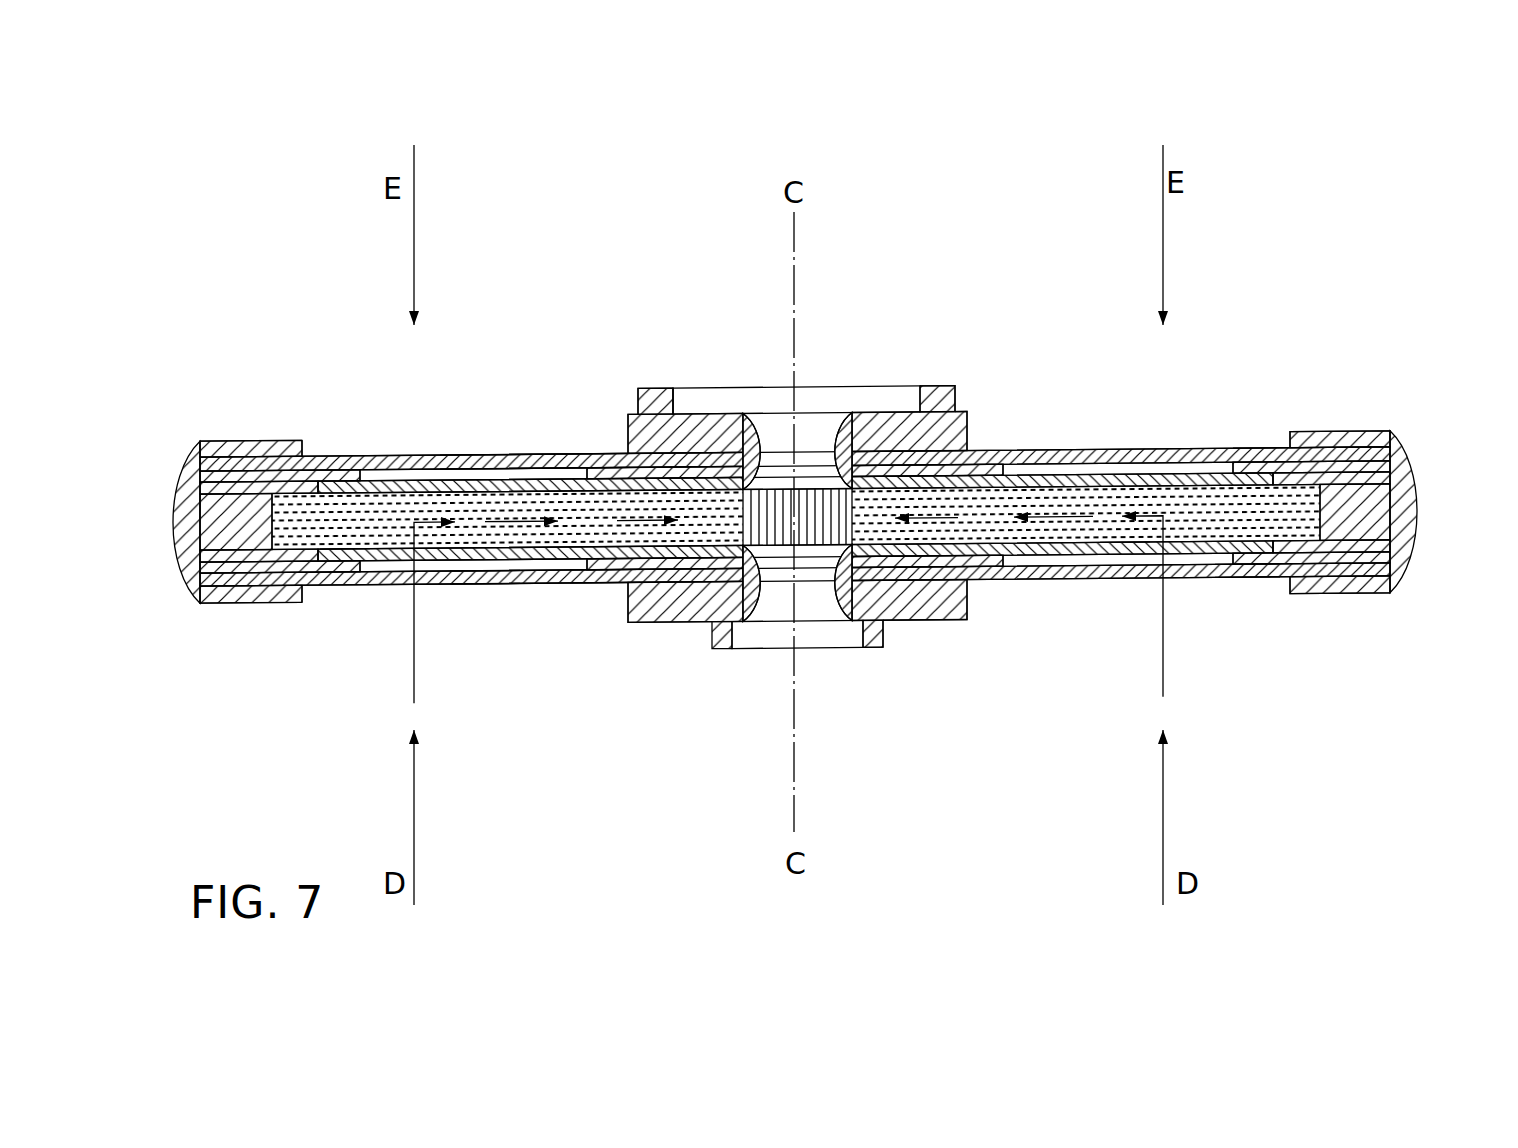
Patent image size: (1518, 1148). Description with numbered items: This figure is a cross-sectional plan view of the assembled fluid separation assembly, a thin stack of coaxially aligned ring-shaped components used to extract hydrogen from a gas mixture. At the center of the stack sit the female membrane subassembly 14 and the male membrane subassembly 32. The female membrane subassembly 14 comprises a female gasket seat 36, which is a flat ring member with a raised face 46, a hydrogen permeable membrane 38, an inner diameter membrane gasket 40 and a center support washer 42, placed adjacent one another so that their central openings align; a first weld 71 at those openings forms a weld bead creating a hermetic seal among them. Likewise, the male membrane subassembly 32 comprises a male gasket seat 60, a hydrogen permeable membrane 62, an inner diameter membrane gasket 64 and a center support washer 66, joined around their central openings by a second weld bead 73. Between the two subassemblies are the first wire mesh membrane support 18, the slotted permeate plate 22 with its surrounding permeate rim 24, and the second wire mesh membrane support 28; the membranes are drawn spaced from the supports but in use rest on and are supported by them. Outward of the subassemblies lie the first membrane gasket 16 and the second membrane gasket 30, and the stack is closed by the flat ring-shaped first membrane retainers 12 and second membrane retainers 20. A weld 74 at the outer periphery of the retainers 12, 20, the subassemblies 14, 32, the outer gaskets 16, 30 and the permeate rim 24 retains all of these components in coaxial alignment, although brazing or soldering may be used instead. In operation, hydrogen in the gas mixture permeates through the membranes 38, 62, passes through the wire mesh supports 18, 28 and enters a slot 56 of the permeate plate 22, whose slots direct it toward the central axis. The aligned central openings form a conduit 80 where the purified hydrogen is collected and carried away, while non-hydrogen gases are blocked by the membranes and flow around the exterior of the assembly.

The first membrane retainers 12 is at (1347, 426).
The female membrane subassembly 14 is at (592, 458).
The first membrane gasket 16 is at (1305, 458).
The first wire mesh membrane support 18 is at (385, 478).
The second membrane retainers 20 is at (1362, 470).
The slotted permeate plate 22 is at (338, 533).
The permeate rim 24 is at (1372, 508).
The second wire mesh membrane support 28 is at (342, 556).
The second membrane gasket 30 is at (1248, 576).
The male membrane subassembly 32 is at (605, 585).
The female gasket seat 36 is at (640, 386).
The hydrogen permeable membrane 38 is at (420, 454).
The inner diameter membrane gasket 40 is at (700, 463).
The center support washer 42 is at (966, 428).
The raised face 46 is at (943, 385).
The slot 56 is at (763, 527).
The male gasket seat 60 is at (708, 648).
The hydrogen permeable membrane 62 is at (481, 587).
The inner diameter membrane gasket 64 is at (606, 567).
The center support washer 66 is at (968, 621).
The first weld 71 is at (757, 445).
The second weld bead 73 is at (757, 625).
The weld 74 is at (191, 601).
The conduit 80 is at (817, 617).